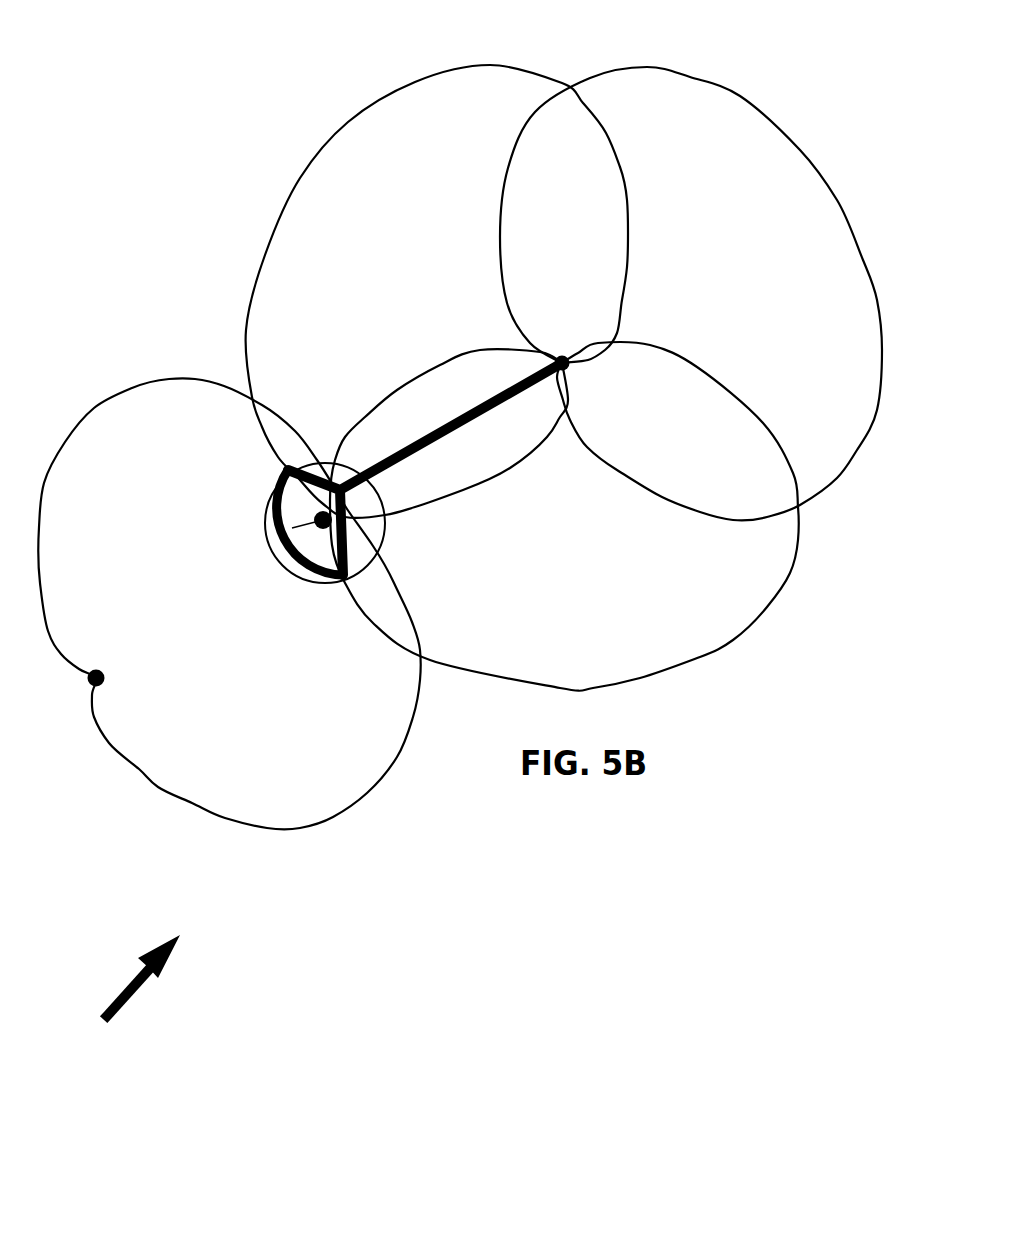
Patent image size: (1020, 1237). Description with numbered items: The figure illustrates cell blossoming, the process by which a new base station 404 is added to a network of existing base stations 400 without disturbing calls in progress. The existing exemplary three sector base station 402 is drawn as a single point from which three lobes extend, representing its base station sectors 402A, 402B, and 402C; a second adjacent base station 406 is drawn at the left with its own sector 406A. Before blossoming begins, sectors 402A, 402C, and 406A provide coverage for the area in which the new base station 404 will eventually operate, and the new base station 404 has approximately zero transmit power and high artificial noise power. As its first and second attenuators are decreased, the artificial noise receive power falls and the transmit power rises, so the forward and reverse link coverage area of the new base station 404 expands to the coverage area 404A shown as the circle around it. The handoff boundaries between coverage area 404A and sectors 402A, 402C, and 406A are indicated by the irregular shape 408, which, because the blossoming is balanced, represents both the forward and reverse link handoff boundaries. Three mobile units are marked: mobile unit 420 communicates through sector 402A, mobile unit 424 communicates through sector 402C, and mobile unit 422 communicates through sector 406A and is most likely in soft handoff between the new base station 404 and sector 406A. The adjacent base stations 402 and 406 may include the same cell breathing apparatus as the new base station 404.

The network of existing base stations 400 is at (118, 996).
The three sector base station 402 is at (562, 352).
The base station sector 402A is at (352, 127).
The base station sector 402B is at (797, 142).
The base station sector 402C is at (728, 638).
The new base station 404 is at (283, 545).
The coverage area 404A is at (262, 522).
The adjacent base station 406 is at (96, 672).
The base station sector 406A is at (110, 388).
The irregular shape 408 is at (283, 468).
The mobile unit 420 is at (360, 368).
The mobile unit 422 is at (275, 505).
The mobile unit 424 is at (370, 520).